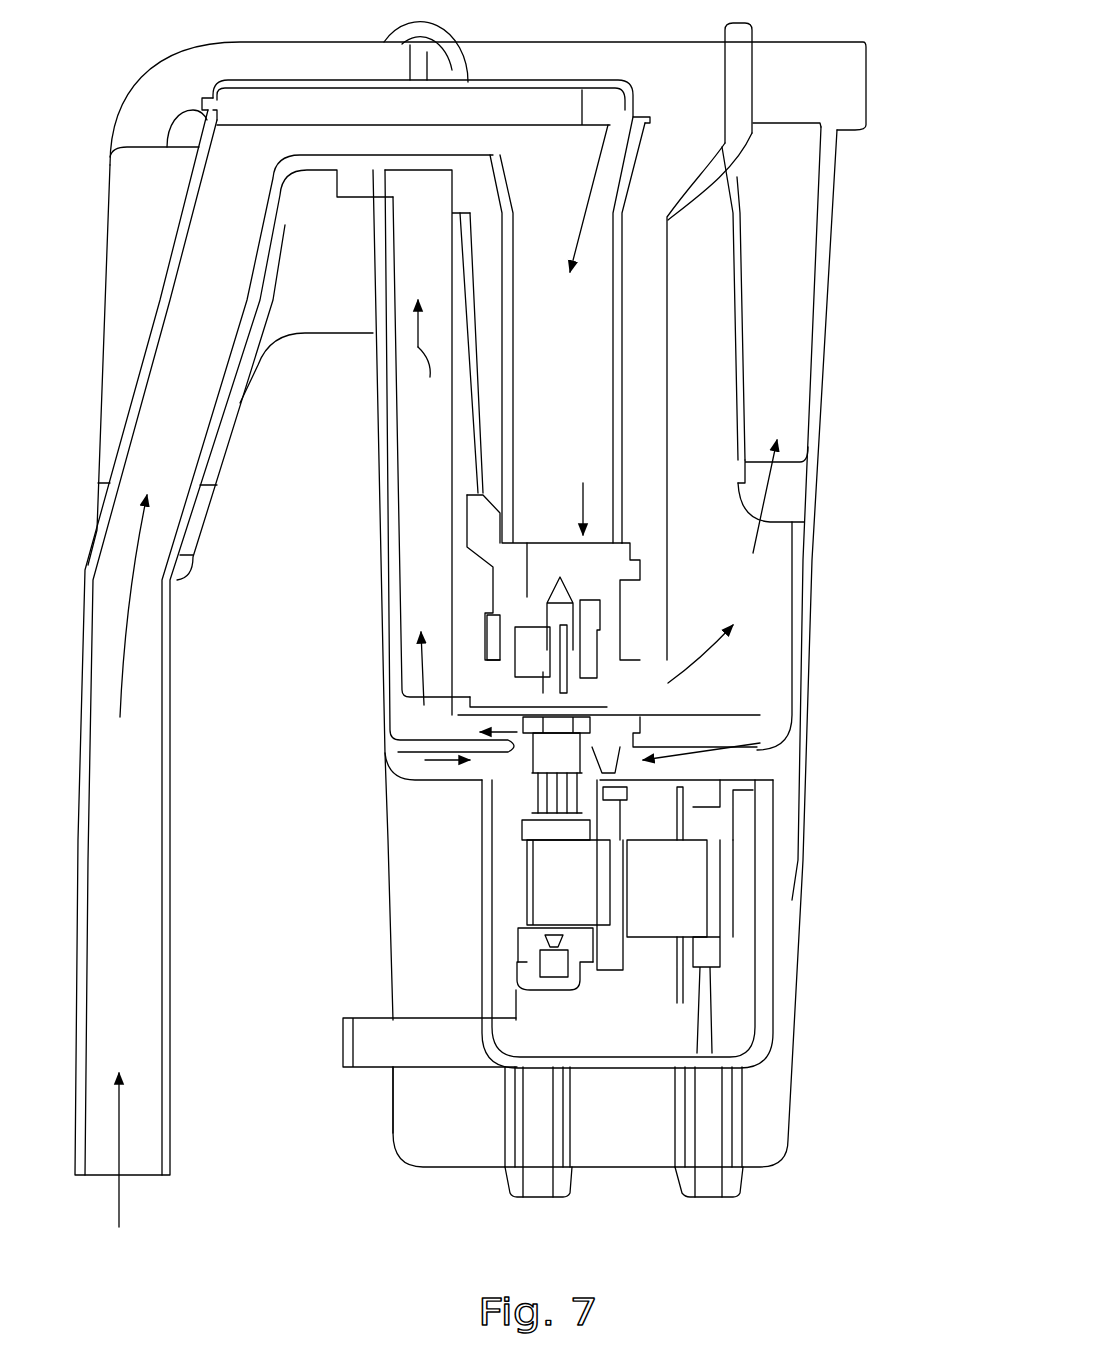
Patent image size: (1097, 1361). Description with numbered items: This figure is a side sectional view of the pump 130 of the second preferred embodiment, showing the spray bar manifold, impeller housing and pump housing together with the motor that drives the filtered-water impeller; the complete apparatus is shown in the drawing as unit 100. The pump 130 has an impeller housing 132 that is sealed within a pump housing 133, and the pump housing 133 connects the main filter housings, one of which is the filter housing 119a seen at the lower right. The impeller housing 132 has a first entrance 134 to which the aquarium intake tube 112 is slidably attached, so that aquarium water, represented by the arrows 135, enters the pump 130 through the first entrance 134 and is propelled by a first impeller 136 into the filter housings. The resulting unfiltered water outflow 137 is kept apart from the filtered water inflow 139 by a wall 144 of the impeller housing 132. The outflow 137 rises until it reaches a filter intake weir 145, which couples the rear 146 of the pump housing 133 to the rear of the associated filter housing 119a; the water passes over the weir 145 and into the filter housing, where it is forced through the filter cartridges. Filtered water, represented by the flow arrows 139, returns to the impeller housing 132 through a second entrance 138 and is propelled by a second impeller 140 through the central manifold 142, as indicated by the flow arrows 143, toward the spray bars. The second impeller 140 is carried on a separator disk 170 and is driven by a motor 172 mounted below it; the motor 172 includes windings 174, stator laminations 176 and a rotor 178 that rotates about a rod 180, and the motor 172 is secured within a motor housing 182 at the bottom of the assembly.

The fuel delivery module 100 is at (852, 330).
The intake tube 112 is at (573, 384).
The main filter housing 119a is at (790, 1075).
The pump 130 is at (817, 818).
The impeller housing 132 is at (787, 683).
The pump housing 133 is at (808, 722).
The first entrance 134 is at (623, 500).
The aquarium water 135 is at (550, 137).
The first impeller 136 is at (587, 643).
The unfiltered water outflow 137 is at (770, 490).
The second entrance 138 is at (588, 743).
The filtered water inflow 139 is at (720, 748).
The second impeller 140 is at (590, 723).
The central manifold 142 is at (420, 545).
The flow arrows 143 is at (425, 668).
The wall 144 is at (783, 647).
The filter intake weir 145 is at (740, 480).
The rear of the pump housing 146 is at (799, 309).
The separator disk 170 is at (595, 710).
The motor 172 is at (740, 947).
The windings 174 is at (652, 875).
The stator laminations 176 is at (568, 882).
The rotor 178 is at (533, 828).
The rod 180 is at (540, 947).
The motor housing 182 is at (760, 862).